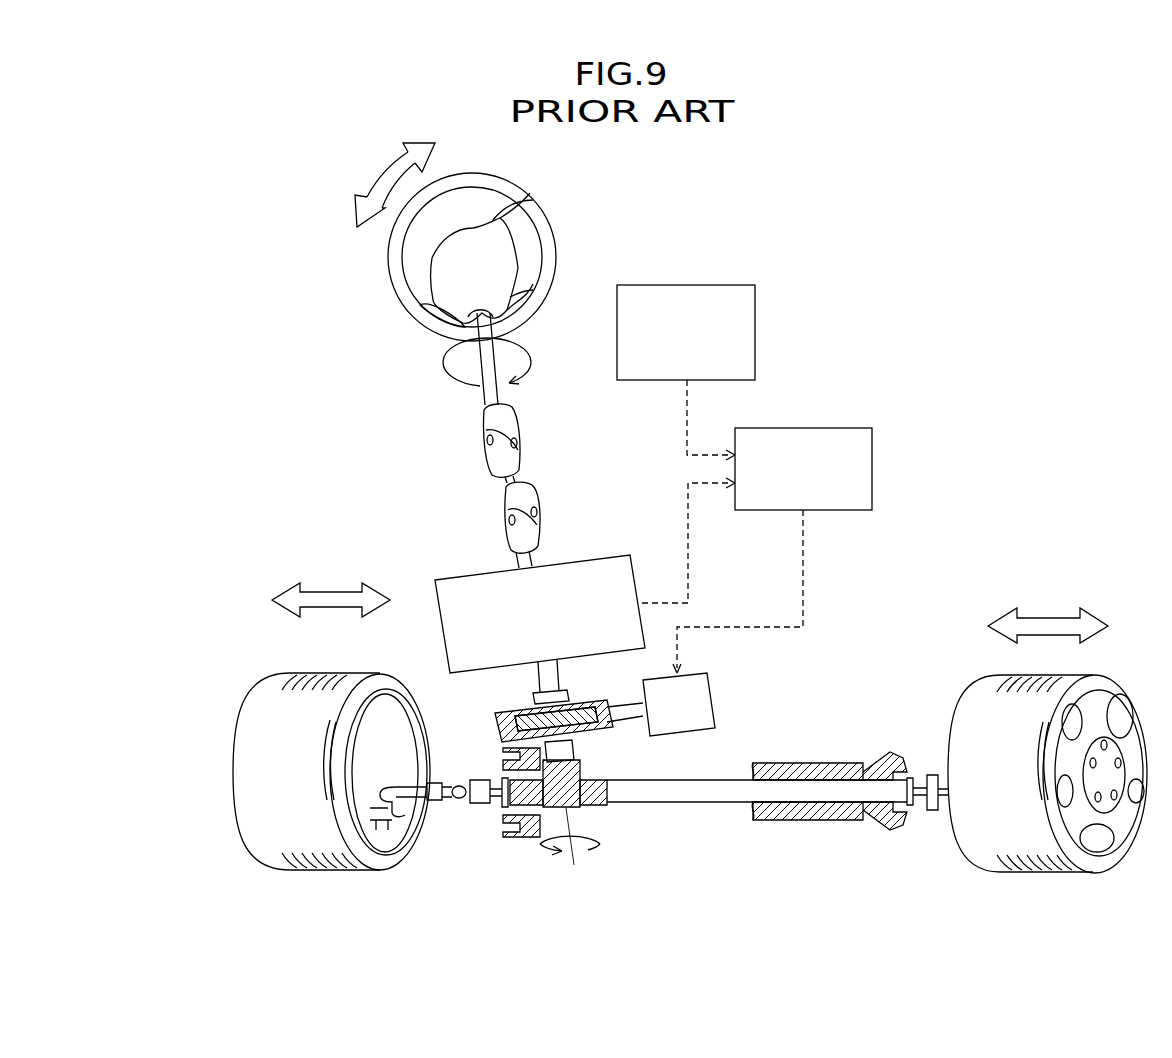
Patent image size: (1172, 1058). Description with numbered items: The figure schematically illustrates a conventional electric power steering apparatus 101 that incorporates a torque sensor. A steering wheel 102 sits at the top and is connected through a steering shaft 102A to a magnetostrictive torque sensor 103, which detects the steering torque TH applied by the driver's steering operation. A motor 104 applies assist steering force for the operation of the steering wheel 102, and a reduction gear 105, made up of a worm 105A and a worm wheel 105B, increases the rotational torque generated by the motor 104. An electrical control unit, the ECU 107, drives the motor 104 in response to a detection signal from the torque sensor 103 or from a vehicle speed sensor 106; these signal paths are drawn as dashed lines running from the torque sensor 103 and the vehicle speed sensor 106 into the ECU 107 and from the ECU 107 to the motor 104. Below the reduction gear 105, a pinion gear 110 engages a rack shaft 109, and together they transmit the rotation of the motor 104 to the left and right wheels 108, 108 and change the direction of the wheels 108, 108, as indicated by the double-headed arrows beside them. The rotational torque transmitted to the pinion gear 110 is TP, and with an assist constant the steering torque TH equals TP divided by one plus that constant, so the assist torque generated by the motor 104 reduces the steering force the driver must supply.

The electric power steering apparatus 101 is at (837, 325).
The steering wheel 102 is at (472, 257).
The steering shaft 102A is at (487, 393).
The torque sensor 103 is at (607, 556).
The motor 104 is at (715, 698).
The reduction gear 105 is at (500, 712).
The worm 105A is at (585, 726).
The worm wheel 105B is at (495, 728).
The vehicle speed sensor 106 is at (723, 285).
The electrical control unit (ECU) 107 is at (845, 428).
The wheels 108 is at (242, 712).
The rack shaft 109 is at (590, 805).
The pinion gear 110 is at (537, 835).
The steering torque TH is at (504, 369).
The rotational torque transmitted to the pinion gear TP is at (569, 847).